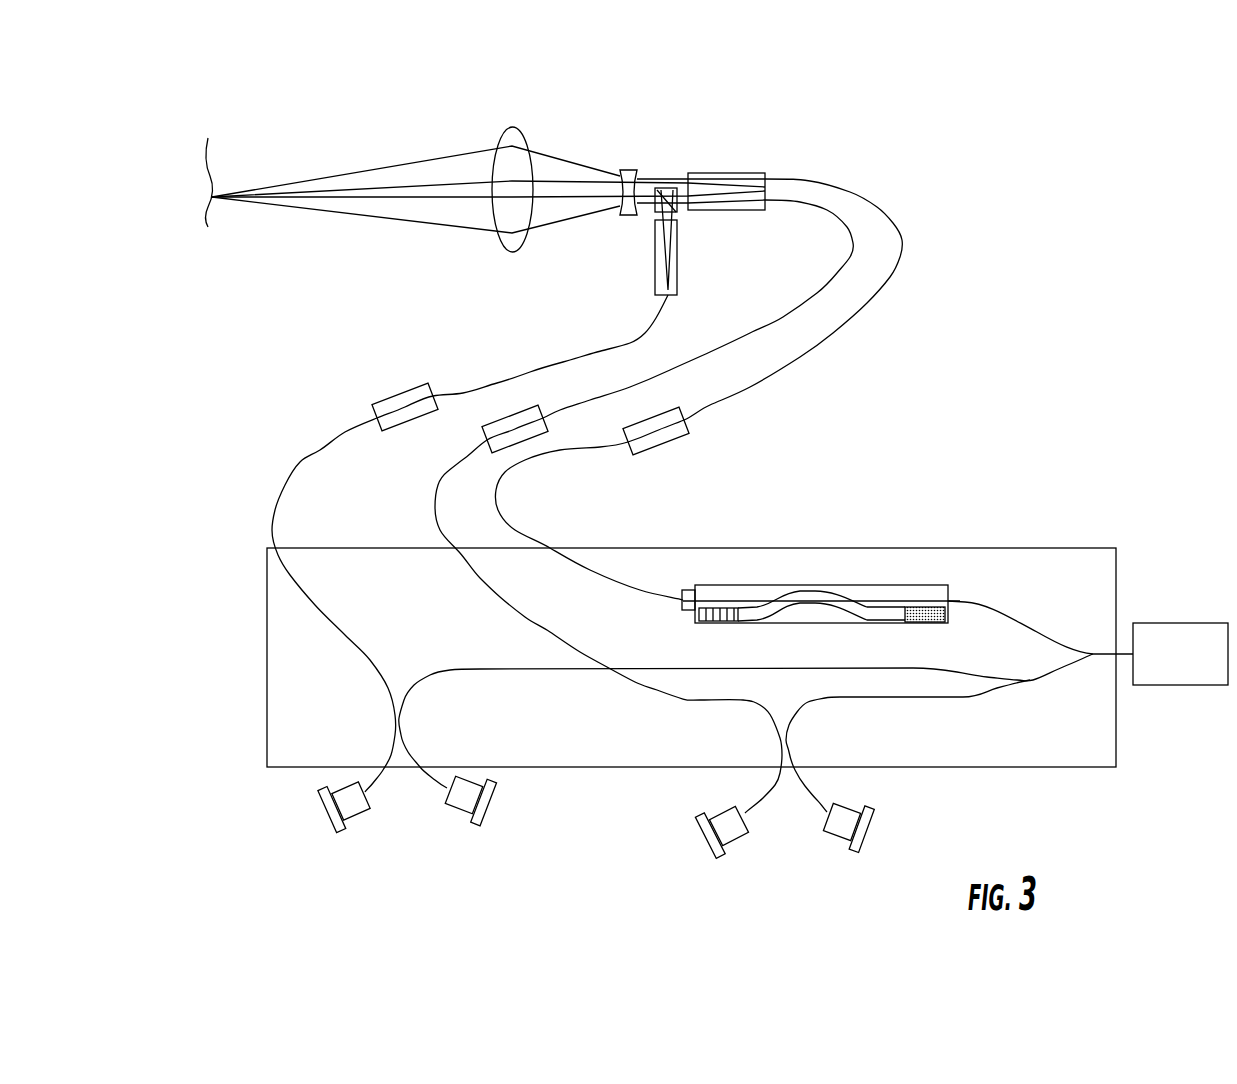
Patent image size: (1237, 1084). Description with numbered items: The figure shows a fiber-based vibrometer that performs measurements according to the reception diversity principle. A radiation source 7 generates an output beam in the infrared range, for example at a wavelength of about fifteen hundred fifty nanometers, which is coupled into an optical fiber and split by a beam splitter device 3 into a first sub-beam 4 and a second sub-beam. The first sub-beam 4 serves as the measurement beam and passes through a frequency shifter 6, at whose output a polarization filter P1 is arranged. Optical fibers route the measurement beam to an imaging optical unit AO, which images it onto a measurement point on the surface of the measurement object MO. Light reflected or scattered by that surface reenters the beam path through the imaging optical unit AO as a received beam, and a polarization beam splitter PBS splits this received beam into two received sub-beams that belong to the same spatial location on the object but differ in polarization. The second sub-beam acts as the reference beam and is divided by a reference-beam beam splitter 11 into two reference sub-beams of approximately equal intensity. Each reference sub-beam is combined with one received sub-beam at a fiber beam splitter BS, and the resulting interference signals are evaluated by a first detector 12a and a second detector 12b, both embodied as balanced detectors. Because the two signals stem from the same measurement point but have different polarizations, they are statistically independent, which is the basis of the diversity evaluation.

The measurement object MO is at (479, 199).
The imaging optical unit AO is at (652, 120).
The polarization beam splitter PBS is at (676, 212).
The polarization filter P1 is at (686, 612).
The frequency shifter 6 is at (822, 607).
The first sub-beam 4 is at (1010, 616).
The beam splitter device 3 is at (1094, 656).
The reference-beam beam splitter 11 is at (1031, 681).
The radiation source 7 is at (1200, 623).
The beam splitter BS is at (606, 733).
The first detector 12a is at (493, 838).
The second detector 12b is at (868, 867).